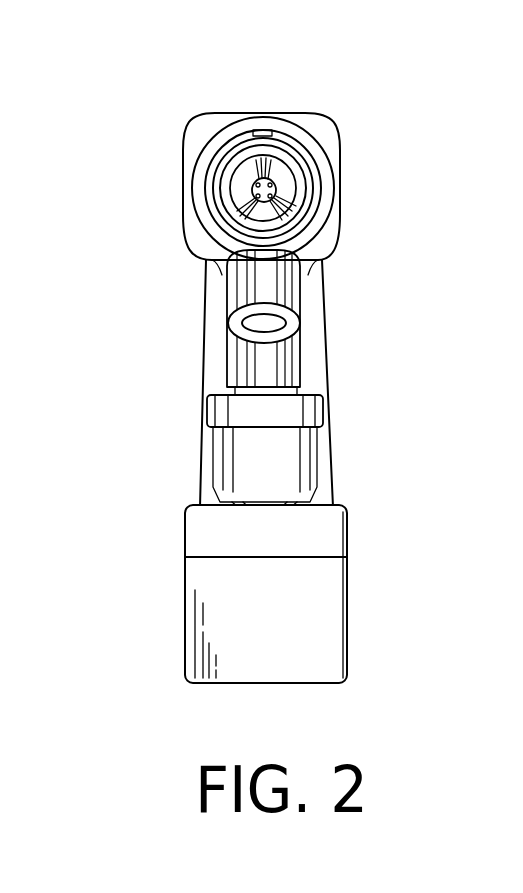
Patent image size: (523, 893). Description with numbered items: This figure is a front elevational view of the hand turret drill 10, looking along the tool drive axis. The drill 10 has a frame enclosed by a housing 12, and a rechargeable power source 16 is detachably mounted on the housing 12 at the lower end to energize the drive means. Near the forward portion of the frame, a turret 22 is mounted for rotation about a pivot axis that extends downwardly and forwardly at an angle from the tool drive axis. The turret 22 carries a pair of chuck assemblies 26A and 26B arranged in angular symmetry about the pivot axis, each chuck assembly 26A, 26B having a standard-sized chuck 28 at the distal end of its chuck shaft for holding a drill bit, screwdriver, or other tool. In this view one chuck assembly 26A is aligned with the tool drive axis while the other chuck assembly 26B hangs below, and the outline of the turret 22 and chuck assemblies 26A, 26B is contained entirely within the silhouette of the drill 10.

The hand turret drill 10 is at (307, 90).
The chuck 28 is at (240, 173).
The chuck assembly 26A is at (324, 188).
The turret 22 is at (262, 275).
The housing 12 is at (324, 322).
The chuck assembly 26B is at (338, 445).
The rechargeable power source 16 is at (348, 606).